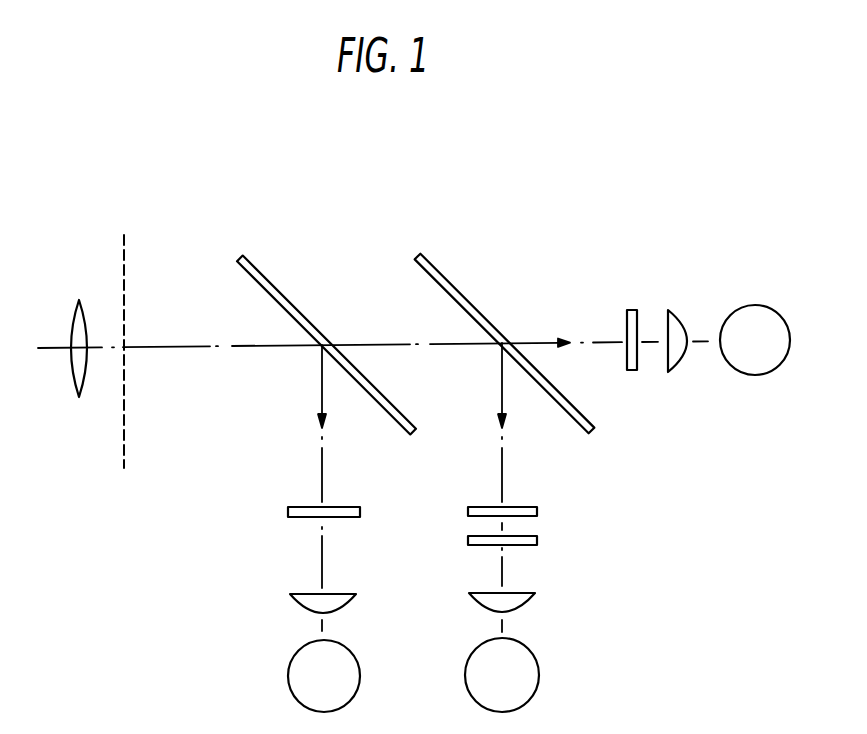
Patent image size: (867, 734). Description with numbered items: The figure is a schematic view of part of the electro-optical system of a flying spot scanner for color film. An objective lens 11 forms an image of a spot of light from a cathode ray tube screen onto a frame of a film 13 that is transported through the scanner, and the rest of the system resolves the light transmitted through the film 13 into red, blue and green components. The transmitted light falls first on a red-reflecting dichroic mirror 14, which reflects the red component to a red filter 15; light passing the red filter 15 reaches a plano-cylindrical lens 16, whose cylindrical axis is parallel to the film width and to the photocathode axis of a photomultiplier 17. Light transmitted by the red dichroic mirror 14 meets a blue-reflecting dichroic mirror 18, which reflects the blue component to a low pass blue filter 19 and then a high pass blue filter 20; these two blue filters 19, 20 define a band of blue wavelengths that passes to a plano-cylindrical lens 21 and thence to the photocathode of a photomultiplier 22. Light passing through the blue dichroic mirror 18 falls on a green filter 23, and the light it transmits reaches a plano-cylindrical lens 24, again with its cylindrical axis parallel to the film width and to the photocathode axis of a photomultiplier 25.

The objective lens 11 is at (67, 318).
The film 13 is at (124, 243).
The red-reflecting dichroic mirror 14 is at (268, 278).
The red filter 15 is at (288, 513).
The plano-cylindrical lens 16 is at (290, 596).
The photomultiplier 17 is at (288, 667).
The blue-reflecting dichroic mirror 18 is at (447, 278).
The low pass blue filter 19 is at (468, 512).
The high pass blue filter 20 is at (468, 542).
The plano-cylindrical lens 21 is at (476, 603).
The photomultiplier 22 is at (466, 670).
The green filter 23 is at (633, 310).
The plano-cylindrical lens 24 is at (677, 315).
The photomultiplier 25 is at (752, 305).